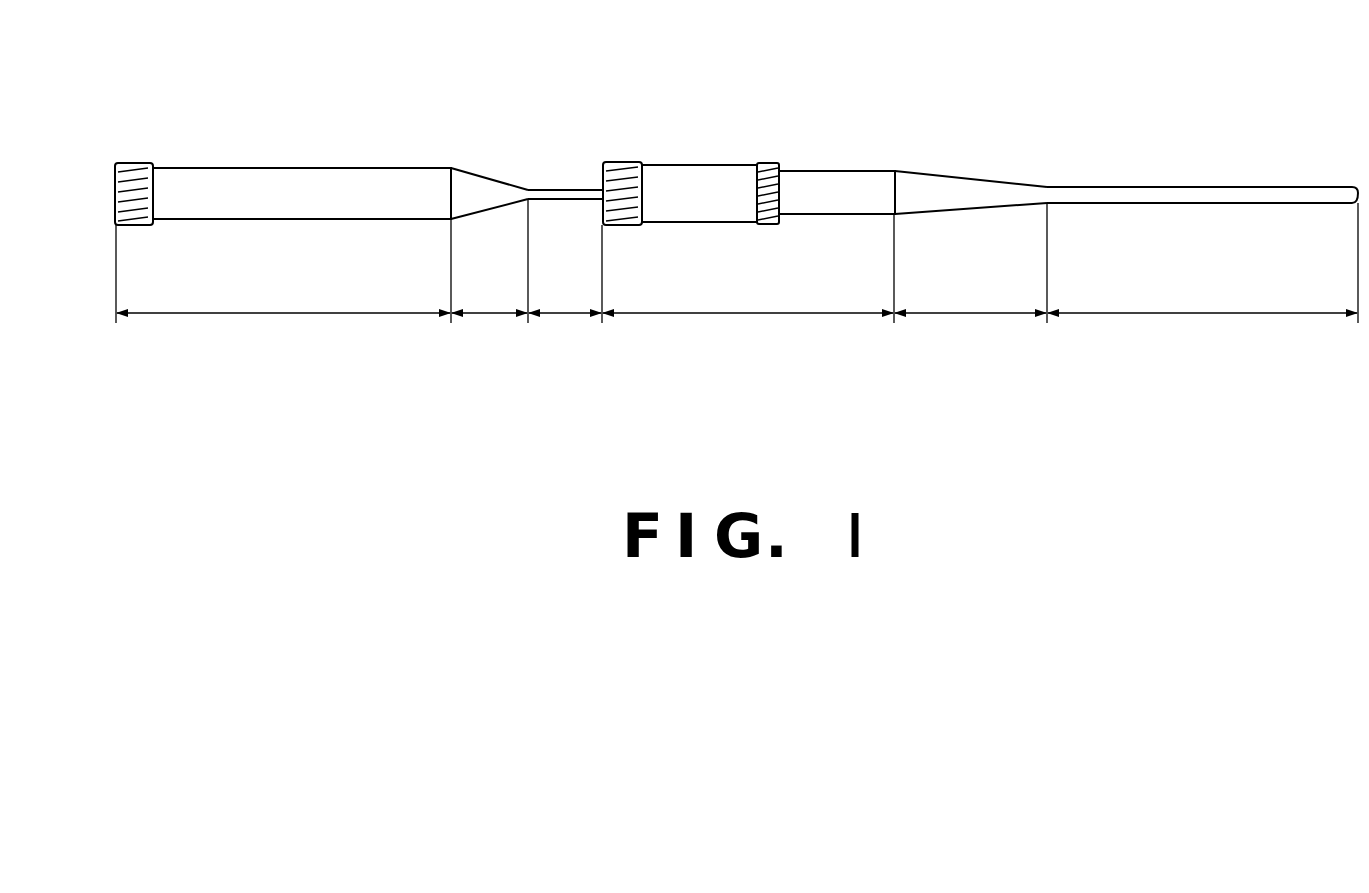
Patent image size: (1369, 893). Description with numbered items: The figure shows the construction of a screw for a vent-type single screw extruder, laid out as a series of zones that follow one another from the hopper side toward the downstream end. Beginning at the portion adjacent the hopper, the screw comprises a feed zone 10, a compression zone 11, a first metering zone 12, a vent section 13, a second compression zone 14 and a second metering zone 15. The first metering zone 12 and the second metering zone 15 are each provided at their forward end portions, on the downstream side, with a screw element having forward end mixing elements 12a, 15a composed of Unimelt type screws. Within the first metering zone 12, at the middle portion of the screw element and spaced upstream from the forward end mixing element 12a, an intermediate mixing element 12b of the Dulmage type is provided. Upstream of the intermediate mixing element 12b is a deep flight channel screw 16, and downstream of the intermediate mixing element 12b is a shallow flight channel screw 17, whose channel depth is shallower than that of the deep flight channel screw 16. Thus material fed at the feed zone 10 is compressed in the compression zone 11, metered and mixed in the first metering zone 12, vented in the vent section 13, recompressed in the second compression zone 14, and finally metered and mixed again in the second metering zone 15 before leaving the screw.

The feed zone 10 is at (1188, 314).
The compression zone 11 is at (995, 314).
The first metering zone 12 is at (750, 314).
The forward end mixing element 12a is at (622, 163).
The intermediate mixing element 12b is at (768, 164).
The vent section 13 is at (568, 314).
The second compression zone 14 is at (478, 314).
The second metering zone 15 is at (282, 314).
The forward end mixing element 15a is at (133, 168).
The deep flight channel screw 16 is at (850, 171).
The shallow flight channel screw 17 is at (697, 166).